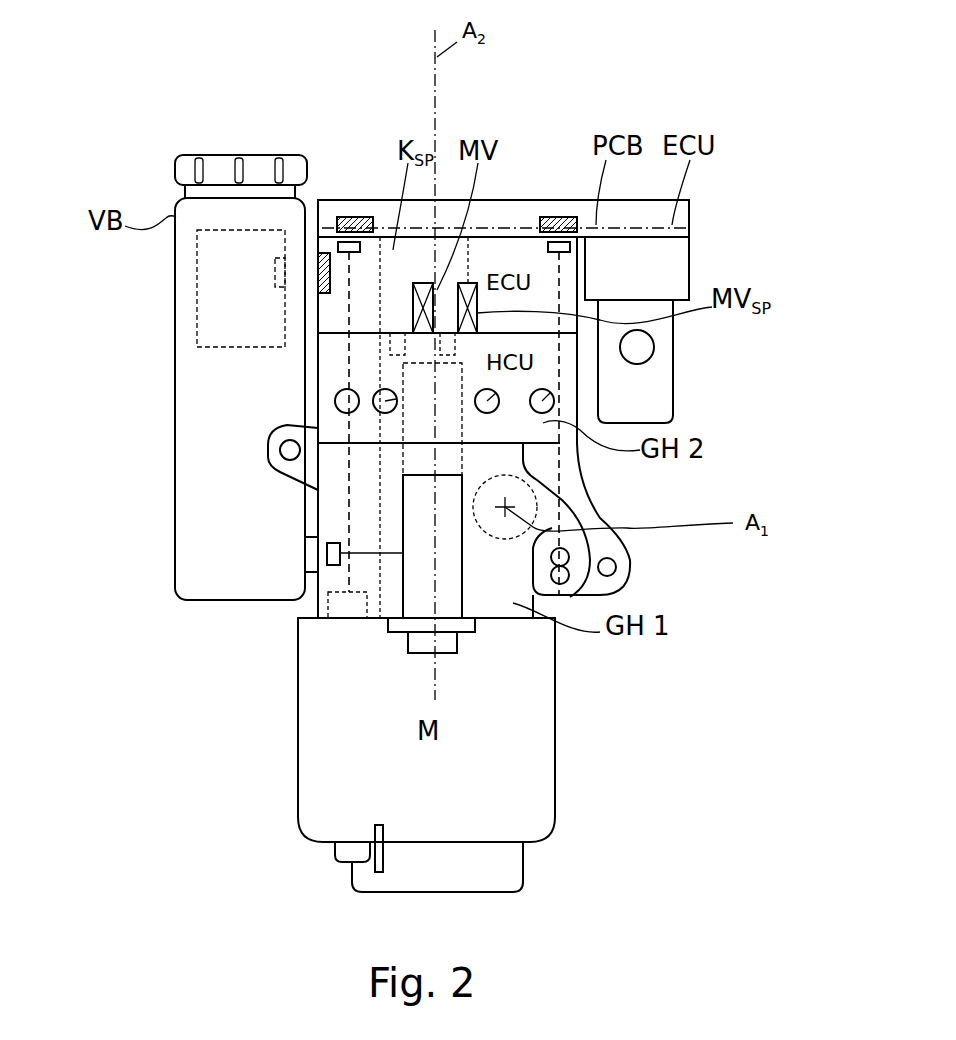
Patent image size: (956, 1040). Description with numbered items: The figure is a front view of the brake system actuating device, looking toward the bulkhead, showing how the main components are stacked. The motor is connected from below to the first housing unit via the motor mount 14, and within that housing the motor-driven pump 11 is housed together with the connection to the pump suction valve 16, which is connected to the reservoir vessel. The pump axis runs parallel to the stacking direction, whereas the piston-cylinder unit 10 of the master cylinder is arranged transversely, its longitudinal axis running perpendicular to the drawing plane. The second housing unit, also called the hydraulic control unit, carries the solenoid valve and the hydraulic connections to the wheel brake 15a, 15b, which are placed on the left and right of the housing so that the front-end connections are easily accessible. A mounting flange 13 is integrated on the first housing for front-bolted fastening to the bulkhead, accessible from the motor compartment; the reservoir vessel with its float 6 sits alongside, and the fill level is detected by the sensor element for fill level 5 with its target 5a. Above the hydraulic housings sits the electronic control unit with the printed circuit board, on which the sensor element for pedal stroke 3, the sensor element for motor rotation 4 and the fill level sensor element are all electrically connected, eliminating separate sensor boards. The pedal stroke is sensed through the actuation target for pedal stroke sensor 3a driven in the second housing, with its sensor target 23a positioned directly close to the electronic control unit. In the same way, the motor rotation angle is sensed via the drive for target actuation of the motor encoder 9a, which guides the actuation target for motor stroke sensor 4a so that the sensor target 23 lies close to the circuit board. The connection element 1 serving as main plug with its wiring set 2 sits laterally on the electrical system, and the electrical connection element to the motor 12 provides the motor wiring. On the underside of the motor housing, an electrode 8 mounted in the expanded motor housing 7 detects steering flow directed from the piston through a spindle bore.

The connection element 1 is at (657, 387).
The wiring set 2 is at (640, 350).
The sensor element for pedal stroke 3 is at (553, 218).
The actuation target for pedal stroke sensor 3a is at (560, 452).
The sensor element for motor rotation 4 is at (340, 218).
The actuation target for motor stroke sensor 4a is at (350, 527).
The sensor element for fill level 5 is at (317, 248).
The target for fill level sensor 5a is at (283, 258).
The float in the reservoir 6 is at (197, 330).
The expanded motor housing 7 is at (352, 875).
The electrode 8 is at (383, 870).
The drive for target actuation of the motor encoder behind the motor rotor 9a is at (337, 603).
The piston-cylinder unit 10 is at (535, 493).
The pump 11 is at (398, 607).
The electrical connection element to the motor 12 is at (380, 368).
The mounting flange 13 is at (270, 452).
The motor mount 14 is at (440, 643).
The hydraulic connection to the wheel brake 15a is at (385, 401).
The hydraulic connection to the wheel brake 15b is at (493, 397).
The connection to the pump suction valve 16 is at (335, 558).
The sensor target 23 is at (336, 238).
The sensor target 23a is at (572, 250).